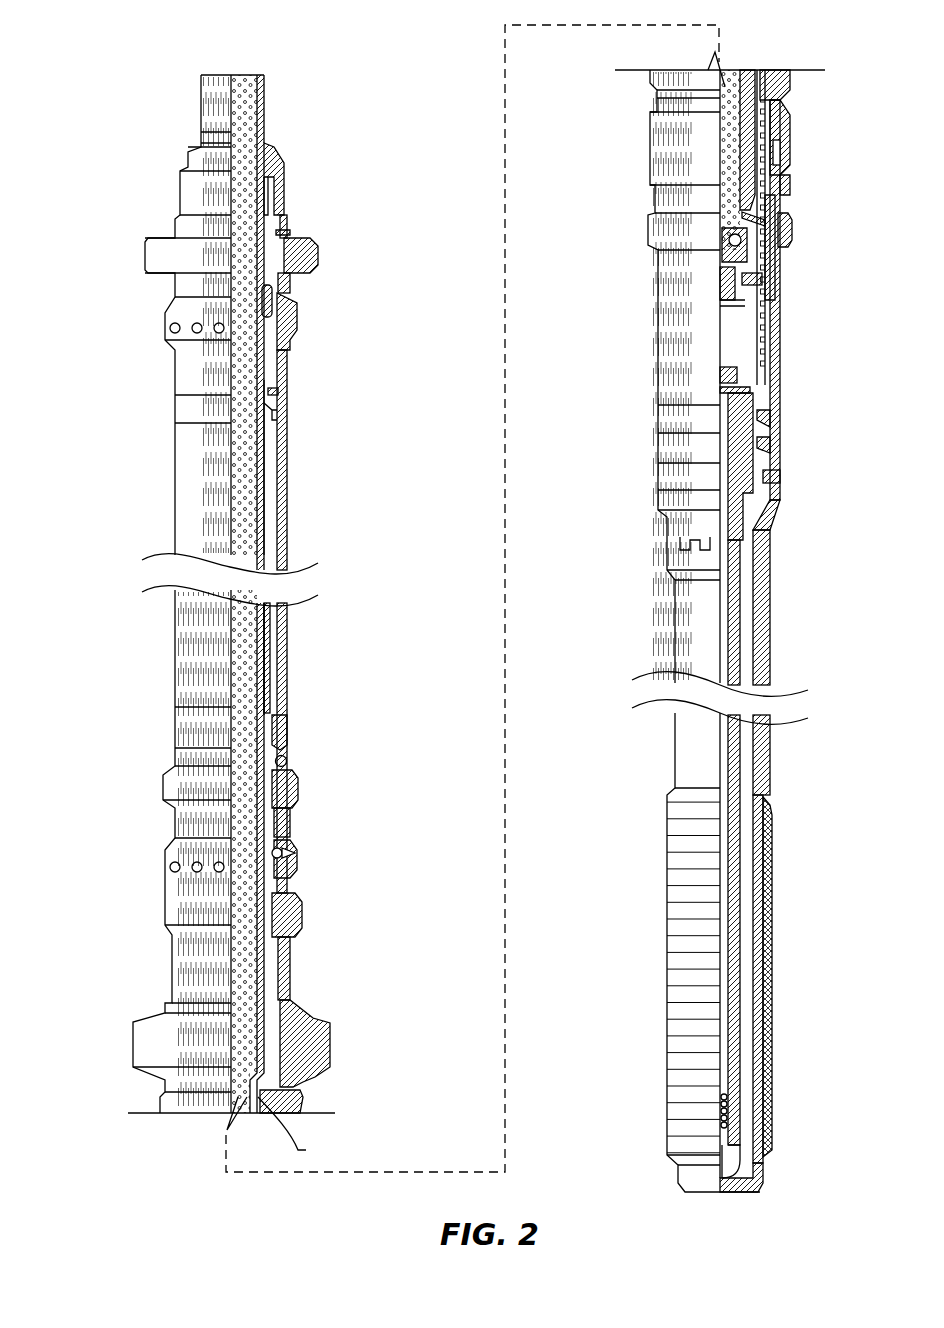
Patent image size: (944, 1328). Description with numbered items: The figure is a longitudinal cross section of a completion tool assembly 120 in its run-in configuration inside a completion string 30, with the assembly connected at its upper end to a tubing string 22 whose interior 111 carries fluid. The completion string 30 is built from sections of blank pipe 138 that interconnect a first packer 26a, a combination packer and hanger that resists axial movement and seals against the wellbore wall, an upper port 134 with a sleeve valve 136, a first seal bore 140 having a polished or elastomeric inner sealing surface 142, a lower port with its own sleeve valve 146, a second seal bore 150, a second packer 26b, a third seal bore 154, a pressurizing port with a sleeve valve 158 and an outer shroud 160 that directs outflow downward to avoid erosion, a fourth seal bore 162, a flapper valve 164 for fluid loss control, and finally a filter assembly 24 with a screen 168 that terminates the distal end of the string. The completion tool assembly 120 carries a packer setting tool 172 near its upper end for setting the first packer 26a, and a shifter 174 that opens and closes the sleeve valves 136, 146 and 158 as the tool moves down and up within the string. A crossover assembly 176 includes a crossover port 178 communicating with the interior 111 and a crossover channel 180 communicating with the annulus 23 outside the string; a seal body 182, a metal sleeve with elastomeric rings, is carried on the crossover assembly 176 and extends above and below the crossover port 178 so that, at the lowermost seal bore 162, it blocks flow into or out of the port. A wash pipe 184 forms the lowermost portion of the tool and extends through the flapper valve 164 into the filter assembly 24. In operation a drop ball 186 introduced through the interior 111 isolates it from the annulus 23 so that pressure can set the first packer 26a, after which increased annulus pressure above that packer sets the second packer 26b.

The tubing string 22 is at (200, 118).
The annulus 23 is at (148, 640).
The filter assembly 24 is at (773, 898).
The first packer 26a is at (318, 258).
The second packer 26b is at (316, 1018).
The completion string 30 is at (288, 640).
The interior of tubing string 111 is at (255, 100).
The completion tool assembly 120 is at (268, 507).
The upper port 134 is at (172, 328).
The sleeve valve 136 is at (293, 318).
The blank pipe 138 is at (288, 535).
The first seal bore 140 is at (297, 790).
The inner sealing surface 142 is at (286, 762).
The sleeve valve 146 is at (286, 853).
The second seal bore 150 is at (297, 918).
The third seal bore 154 is at (300, 1105).
The sleeve valve 158 is at (770, 152).
The outer shroud 160 is at (790, 182).
The fourth seal bore 162 is at (772, 228).
The flapper valve 164 is at (775, 478).
The screen 168 is at (775, 1030).
The packer setting tool 172 is at (284, 160).
The shifter 174 is at (278, 392).
The crossover assembly 176 is at (738, 170).
The crossover port 178 is at (740, 215).
The crossover channel 180 is at (760, 263).
The seal body 182 is at (793, 340).
The wash pipe 184 is at (741, 845).
The drop ball 186 is at (720, 247).